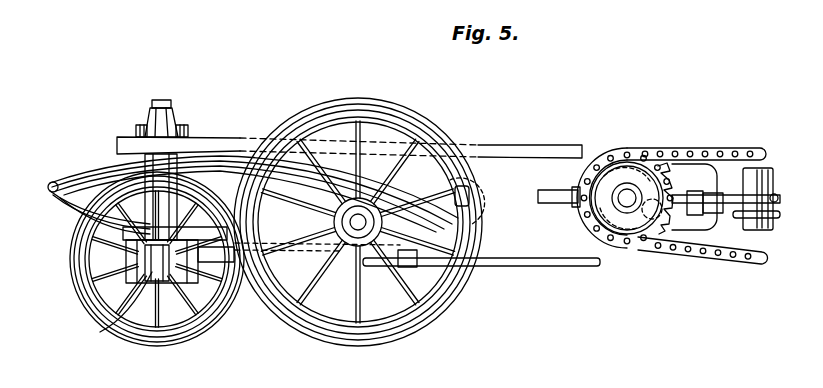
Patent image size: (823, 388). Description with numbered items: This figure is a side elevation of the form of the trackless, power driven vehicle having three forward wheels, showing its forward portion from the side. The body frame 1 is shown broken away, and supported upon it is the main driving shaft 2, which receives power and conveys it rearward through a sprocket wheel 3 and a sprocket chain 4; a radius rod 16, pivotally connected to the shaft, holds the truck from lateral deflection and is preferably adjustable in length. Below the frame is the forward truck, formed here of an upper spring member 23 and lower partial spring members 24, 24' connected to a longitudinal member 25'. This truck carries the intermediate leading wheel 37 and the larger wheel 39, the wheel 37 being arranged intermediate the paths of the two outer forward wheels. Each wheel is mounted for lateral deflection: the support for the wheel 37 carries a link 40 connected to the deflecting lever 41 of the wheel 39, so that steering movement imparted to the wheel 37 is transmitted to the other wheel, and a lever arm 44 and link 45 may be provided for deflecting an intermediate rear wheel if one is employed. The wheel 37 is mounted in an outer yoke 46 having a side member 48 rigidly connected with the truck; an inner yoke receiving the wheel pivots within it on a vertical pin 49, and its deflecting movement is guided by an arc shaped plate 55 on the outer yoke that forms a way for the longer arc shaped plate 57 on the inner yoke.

The body frame 1 is at (532, 146).
The main driving shaft 2 is at (622, 203).
The sprocket wheel 3 is at (624, 173).
The sprocket chain 4 is at (718, 150).
The radius rod 16 is at (745, 222).
The upper spring member 23 is at (112, 168).
The lower partial spring member 24 is at (90, 213).
The lower partial spring member 24' is at (481, 212).
The longitudinal member 25' is at (235, 292).
The wheel 37 is at (198, 336).
The wheel 39 is at (408, 112).
The link 40 is at (312, 262).
The deflecting lever 41 is at (402, 274).
The lever arm 44 is at (332, 216).
The link 45 is at (562, 267).
The yoke 46 is at (151, 122).
The side member 48 is at (108, 329).
The vertical pin 49 is at (181, 127).
The arc shaped plate 55 is at (140, 275).
The arc shaped plate 57 is at (132, 252).